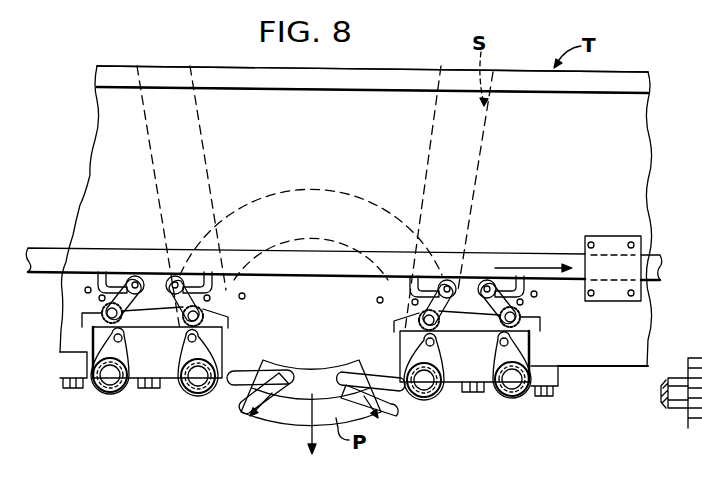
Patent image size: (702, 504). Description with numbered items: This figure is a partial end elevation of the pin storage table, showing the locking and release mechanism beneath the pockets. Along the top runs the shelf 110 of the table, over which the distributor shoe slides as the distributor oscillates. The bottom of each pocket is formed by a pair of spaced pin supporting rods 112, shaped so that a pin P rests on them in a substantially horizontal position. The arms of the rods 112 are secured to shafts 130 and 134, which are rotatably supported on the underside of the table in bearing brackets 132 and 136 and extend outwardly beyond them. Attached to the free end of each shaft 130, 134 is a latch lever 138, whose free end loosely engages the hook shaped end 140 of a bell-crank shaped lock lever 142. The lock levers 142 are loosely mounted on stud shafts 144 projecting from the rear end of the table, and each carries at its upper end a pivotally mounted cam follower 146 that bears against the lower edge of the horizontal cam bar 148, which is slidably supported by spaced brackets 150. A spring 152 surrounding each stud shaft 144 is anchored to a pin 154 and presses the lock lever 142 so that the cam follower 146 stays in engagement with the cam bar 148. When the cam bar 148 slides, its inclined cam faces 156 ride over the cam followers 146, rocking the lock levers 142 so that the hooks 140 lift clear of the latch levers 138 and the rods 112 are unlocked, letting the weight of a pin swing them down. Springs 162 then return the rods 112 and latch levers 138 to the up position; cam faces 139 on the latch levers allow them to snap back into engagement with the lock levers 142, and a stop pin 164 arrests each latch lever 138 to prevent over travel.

The shelf 110 is at (97, 74).
The pin supporting rods 112 is at (248, 412).
The shaft 130 is at (198, 377).
The bearing brackets 132 is at (152, 374).
The shaft 134 is at (110, 376).
The frame block 136 is at (63, 372).
The latch lever 138 is at (117, 351).
The cam faces 139 is at (84, 365).
The hook shaped end 140 is at (82, 322).
The lock lever 142 is at (133, 276).
The stud shafts 144 is at (122, 312).
The cam follower 146 is at (160, 280).
The cam bar 148 is at (40, 248).
The brackets 150 is at (611, 236).
The spring 152 is at (102, 296).
The pin 154 is at (207, 296).
The cam faces 156 is at (100, 274).
The springs 162 is at (92, 349).
The stop pin 164 is at (178, 334).